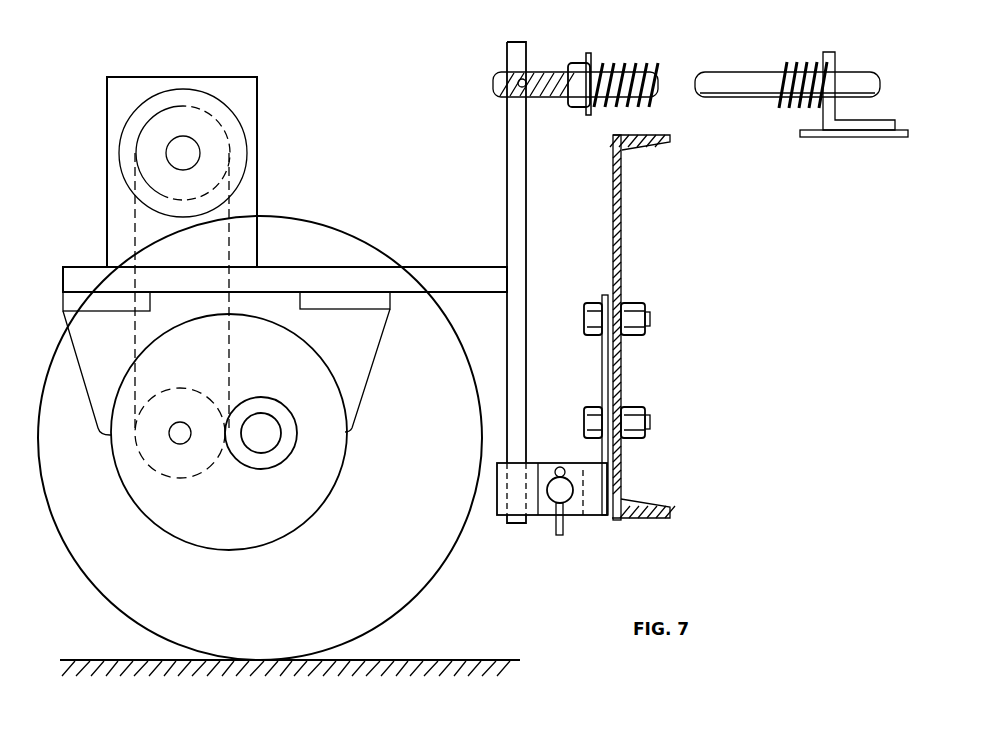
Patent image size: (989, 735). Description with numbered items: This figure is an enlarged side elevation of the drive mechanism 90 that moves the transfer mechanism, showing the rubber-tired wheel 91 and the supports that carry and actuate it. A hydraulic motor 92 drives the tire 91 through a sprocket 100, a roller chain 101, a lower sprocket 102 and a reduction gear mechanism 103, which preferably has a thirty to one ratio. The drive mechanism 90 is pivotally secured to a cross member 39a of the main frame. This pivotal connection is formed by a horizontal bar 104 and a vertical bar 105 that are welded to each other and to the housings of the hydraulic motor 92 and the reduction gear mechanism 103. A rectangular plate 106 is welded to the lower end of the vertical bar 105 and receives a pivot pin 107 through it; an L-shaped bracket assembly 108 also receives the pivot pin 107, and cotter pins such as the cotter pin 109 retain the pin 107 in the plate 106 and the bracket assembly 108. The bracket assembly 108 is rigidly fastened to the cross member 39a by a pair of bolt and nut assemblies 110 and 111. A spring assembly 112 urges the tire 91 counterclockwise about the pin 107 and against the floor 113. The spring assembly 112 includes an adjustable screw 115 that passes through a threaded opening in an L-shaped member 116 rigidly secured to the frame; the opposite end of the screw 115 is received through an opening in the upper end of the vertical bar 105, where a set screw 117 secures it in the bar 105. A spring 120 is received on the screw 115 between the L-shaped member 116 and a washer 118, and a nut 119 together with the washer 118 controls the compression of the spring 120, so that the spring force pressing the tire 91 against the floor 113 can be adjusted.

The cross member 39a is at (622, 213).
The drive mechanism 90 is at (421, 198).
The rubber-tired wheel 91 is at (412, 527).
The hydraulic motor 92 is at (107, 107).
The sprocket 100 is at (215, 129).
The roller chain 101 is at (228, 195).
The lower sprocket 102 is at (159, 471).
The reduction gear mechanism 103 is at (347, 467).
The horizontal bar 104 is at (455, 267).
The vertical bar 105 is at (527, 243).
The rectangular plate 106 is at (534, 462).
The pivot pin 107 is at (553, 504).
The L-shaped bracket assembly 108 is at (605, 295).
The cotter pin 109 is at (566, 527).
The bolt and nut assembly 110 is at (650, 302).
The bolt and nut assembly 111 is at (650, 403).
The spring assembly 112 is at (708, 58).
The floor 113 is at (96, 660).
The adjustable screw 115 is at (852, 72).
The L-shaped member 116 is at (858, 123).
The set screw 117 is at (518, 81).
The washer 118 is at (589, 53).
The nut 119 is at (577, 62).
The spring 120 is at (622, 63).